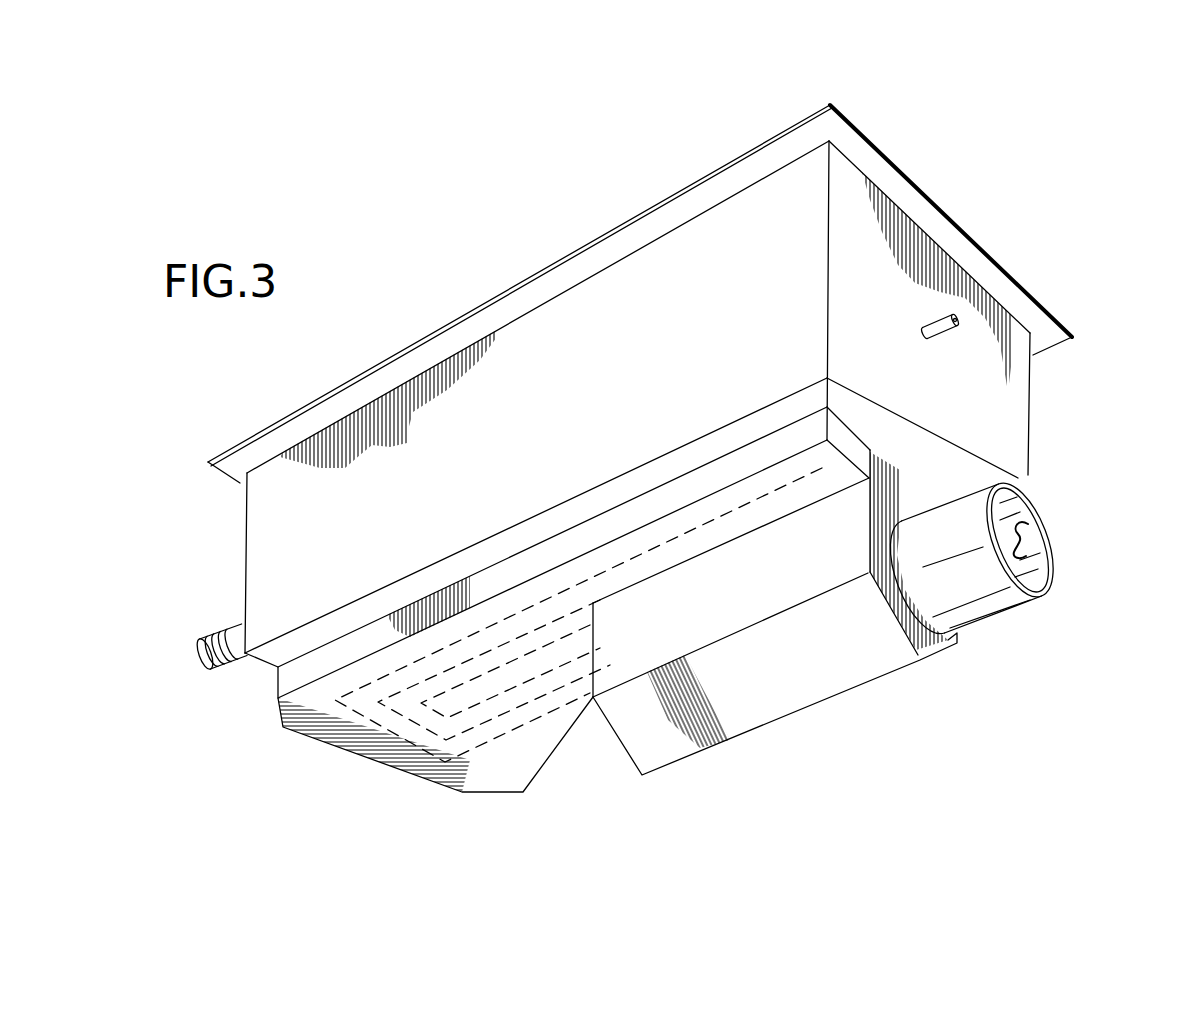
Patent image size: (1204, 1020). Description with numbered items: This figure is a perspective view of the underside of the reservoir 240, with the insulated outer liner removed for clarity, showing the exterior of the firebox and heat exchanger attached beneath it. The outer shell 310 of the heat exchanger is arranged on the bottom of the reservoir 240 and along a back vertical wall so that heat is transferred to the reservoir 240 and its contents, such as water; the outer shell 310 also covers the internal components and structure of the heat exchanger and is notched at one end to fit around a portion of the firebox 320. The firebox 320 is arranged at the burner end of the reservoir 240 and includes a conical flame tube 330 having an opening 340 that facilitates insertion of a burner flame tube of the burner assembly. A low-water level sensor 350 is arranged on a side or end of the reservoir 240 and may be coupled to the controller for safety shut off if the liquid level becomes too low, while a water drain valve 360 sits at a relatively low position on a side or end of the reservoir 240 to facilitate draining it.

The reservoir 240 is at (757, 232).
The outer shell 310 is at (419, 732).
The firebox 320 is at (818, 685).
The conical flame tube 330 is at (997, 613).
The opening 340 is at (1030, 537).
The low-water level sensor 350 is at (948, 333).
The water drain valve 360 is at (235, 633).